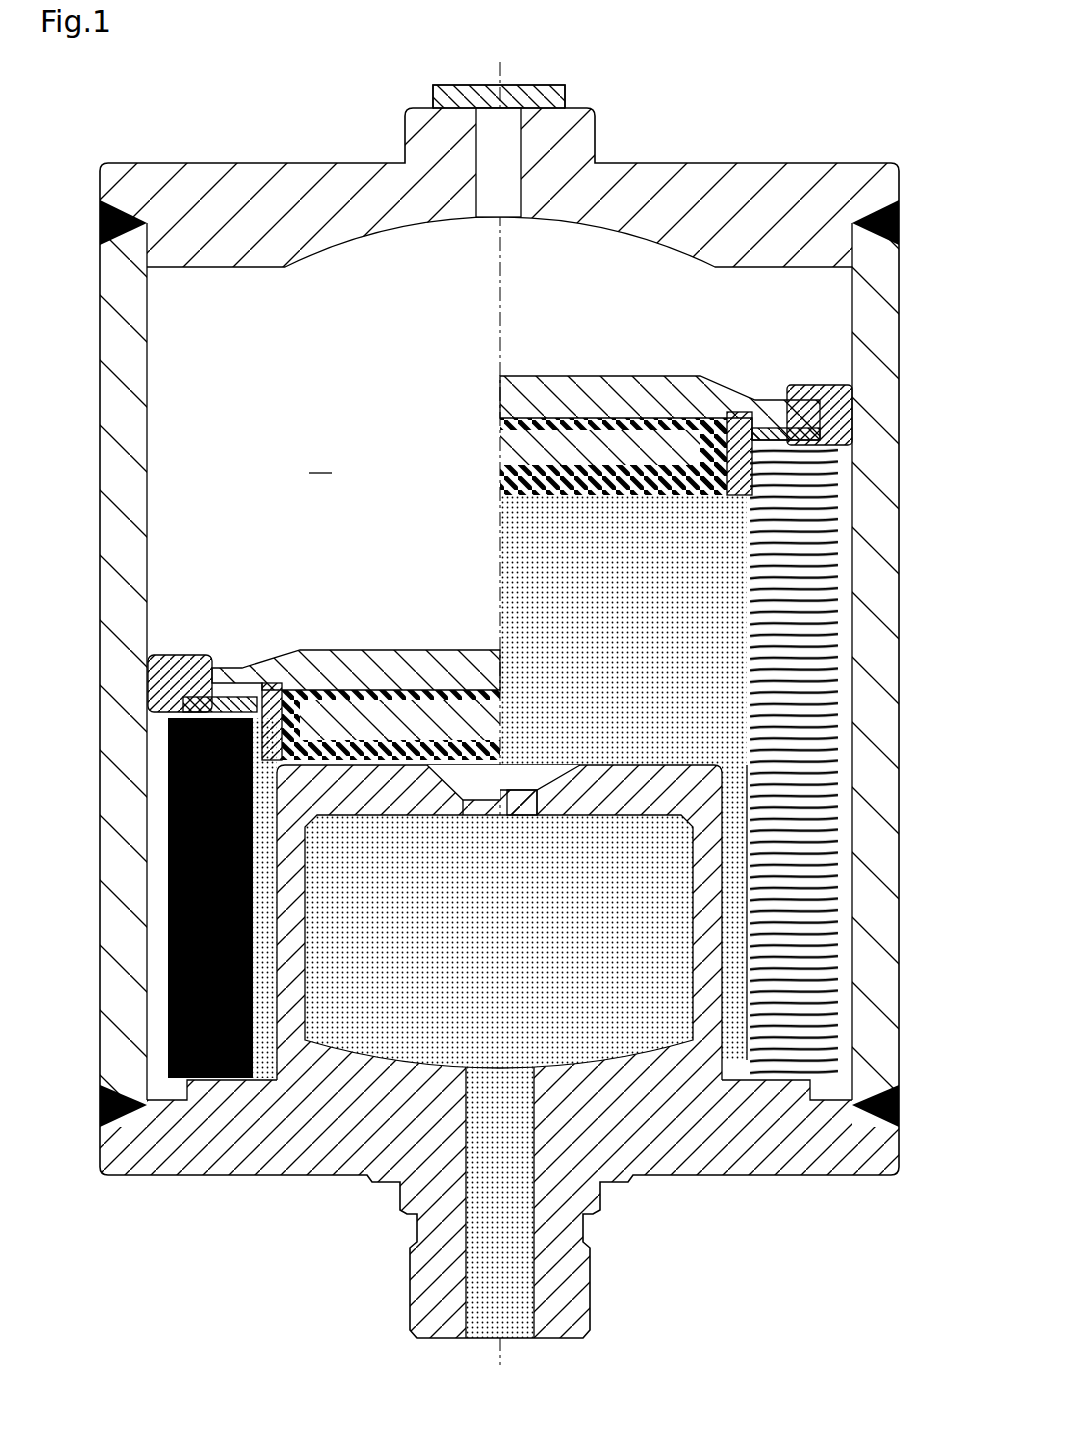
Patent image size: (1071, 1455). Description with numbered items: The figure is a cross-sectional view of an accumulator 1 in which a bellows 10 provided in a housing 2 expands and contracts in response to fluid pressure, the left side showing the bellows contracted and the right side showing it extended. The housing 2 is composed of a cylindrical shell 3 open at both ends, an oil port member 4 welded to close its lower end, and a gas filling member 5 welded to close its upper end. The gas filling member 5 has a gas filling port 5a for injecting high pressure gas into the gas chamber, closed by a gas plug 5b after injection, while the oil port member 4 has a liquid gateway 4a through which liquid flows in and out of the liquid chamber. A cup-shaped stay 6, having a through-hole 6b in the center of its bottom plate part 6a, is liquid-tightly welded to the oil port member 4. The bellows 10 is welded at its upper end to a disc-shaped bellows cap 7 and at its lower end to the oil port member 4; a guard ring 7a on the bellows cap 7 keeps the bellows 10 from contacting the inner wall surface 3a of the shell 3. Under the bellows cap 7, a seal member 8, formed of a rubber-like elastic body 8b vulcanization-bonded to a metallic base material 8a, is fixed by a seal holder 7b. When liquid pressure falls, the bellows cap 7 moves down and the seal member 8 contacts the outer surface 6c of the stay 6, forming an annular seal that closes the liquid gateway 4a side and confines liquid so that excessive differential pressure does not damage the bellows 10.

The accumulator 1 is at (764, 103).
The housing 2 is at (86, 138).
The cylindrical shell 3 is at (106, 443).
The inner wall surface 3a is at (162, 552).
The oil port member 4 is at (768, 1178).
The liquid gateway 4a is at (522, 1278).
The gas filling member 5 is at (707, 163).
The gas filling port 5a is at (513, 187).
The gas plug 5b is at (526, 85).
The stay 6 is at (632, 750).
The bottom plate part 6a is at (498, 838).
The through-hole 6b is at (506, 797).
The outer surface 6c is at (712, 745).
The bellows cap 7 is at (362, 652).
The guard ring 7a is at (196, 655).
The seal holder 7b is at (240, 668).
The seal member 8 is at (468, 580).
The metallic base material 8a is at (426, 690).
The rubber-like elastic body 8b is at (468, 745).
The bellows 10 is at (840, 582).